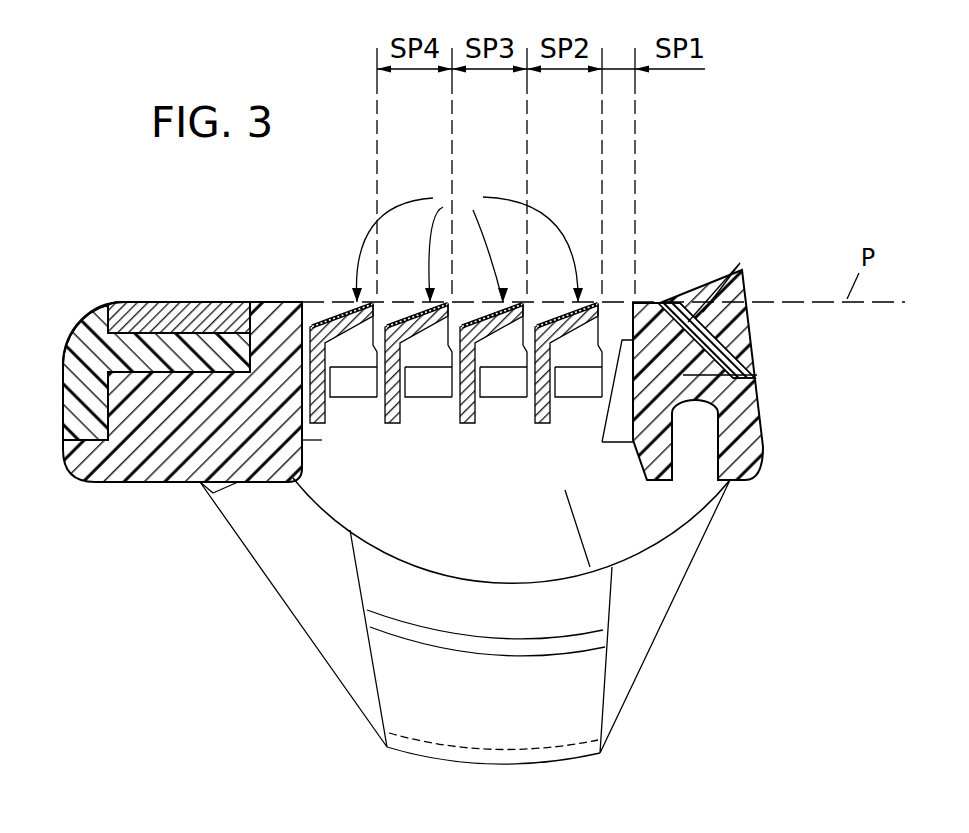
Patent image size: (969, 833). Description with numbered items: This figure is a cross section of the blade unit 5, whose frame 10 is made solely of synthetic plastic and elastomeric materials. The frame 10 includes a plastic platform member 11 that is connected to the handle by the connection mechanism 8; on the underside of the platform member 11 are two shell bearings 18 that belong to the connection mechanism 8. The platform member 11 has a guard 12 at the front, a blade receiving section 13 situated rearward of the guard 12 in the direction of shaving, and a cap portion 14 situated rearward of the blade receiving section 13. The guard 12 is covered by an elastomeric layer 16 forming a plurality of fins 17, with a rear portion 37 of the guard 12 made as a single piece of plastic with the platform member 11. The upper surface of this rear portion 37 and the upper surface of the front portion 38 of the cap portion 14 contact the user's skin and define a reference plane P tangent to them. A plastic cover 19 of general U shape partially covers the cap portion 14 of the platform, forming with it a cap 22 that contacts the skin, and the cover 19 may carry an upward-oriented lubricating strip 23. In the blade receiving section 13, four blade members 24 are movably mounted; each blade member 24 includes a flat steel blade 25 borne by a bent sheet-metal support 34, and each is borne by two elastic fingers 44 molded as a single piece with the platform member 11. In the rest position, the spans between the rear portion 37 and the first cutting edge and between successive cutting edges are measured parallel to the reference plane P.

The blade unit 5 is at (827, 194).
The connection mechanism 8 is at (675, 675).
The frame 10 is at (774, 456).
The platform member 11 is at (756, 477).
The guard 12 is at (761, 413).
The blade receiving section 13 is at (470, 452).
The cap portion 14 is at (170, 456).
The elastomeric layer 16 is at (754, 363).
The fins 17 is at (725, 279).
The shell bearings 18 is at (573, 697).
The cover 19 is at (80, 318).
The cap 22 is at (240, 292).
The lubricating strip 23 is at (182, 313).
The blade member 24 is at (467, 241).
The blade 25 is at (342, 312).
The bent support 34 is at (358, 362).
The rear portion of the guard 37 is at (652, 302).
The front portion of the cap portion 38 is at (277, 300).
The elastic fingers 44 is at (580, 360).